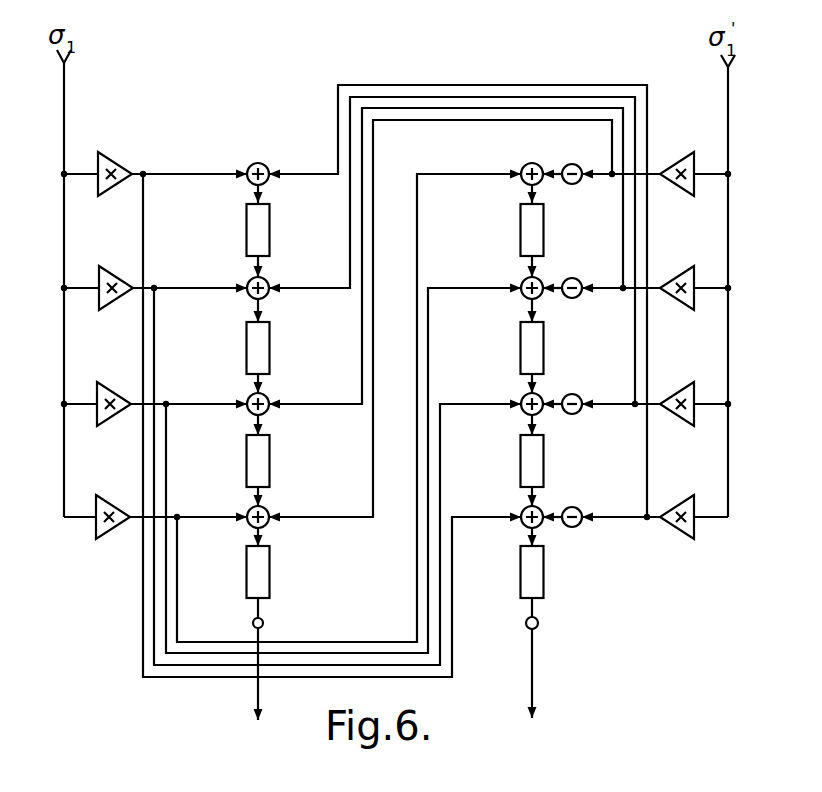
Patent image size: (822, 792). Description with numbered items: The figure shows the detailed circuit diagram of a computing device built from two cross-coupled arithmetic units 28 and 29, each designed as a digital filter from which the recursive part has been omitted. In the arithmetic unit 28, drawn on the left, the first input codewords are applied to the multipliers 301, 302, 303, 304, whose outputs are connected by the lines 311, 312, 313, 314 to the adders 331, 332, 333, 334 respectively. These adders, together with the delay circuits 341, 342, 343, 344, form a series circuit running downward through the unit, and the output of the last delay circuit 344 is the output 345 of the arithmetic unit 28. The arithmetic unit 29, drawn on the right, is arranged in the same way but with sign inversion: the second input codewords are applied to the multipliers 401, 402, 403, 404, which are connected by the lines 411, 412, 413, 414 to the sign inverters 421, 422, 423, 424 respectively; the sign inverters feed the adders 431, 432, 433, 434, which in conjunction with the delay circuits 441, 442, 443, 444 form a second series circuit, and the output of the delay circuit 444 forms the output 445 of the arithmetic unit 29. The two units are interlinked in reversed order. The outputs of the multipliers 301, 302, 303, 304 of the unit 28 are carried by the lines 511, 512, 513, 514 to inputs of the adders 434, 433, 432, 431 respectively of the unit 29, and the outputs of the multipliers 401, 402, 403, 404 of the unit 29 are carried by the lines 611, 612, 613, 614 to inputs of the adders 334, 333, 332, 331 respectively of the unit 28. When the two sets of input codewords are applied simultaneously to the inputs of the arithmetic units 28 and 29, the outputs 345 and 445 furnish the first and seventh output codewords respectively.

The arithmetic unit 28 is at (205, 74).
The arithmetic unit 29 is at (612, 44).
The multiplier 301 is at (109, 153).
The multiplier 302 is at (112, 267).
The multiplier 303 is at (110, 382).
The multiplier 304 is at (108, 495).
The line 311 is at (174, 172).
The line 312 is at (180, 286).
The line 313 is at (192, 402).
The line 314 is at (200, 514).
The adder 331 is at (270, 162).
The adder 332 is at (270, 281).
The adder 333 is at (271, 397).
The adder 334 is at (271, 510).
The delay circuit 341 is at (266, 236).
The delay circuit 342 is at (266, 352).
The delay circuit 343 is at (267, 467).
The delay circuit 344 is at (266, 590).
The output 345 is at (263, 623).
The multiplier 401 is at (676, 162).
The multiplier 402 is at (680, 274).
The multiplier 403 is at (678, 390).
The multiplier 404 is at (678, 504).
The line 411 is at (590, 170).
The line 412 is at (588, 284).
The line 413 is at (600, 398).
The line 414 is at (618, 512).
The sign inverter 421 is at (572, 185).
The sign inverter 422 is at (573, 299).
The sign inverter 423 is at (573, 415).
The sign inverter 424 is at (573, 528).
The adder 431 is at (526, 163).
The adder 432 is at (522, 282).
The adder 433 is at (522, 396).
The adder 434 is at (522, 511).
The delay circuit 441 is at (521, 230).
The delay circuit 442 is at (521, 348).
The delay circuit 443 is at (521, 458).
The delay circuit 444 is at (521, 586).
The output 445 is at (526, 626).
The line 511 is at (143, 207).
The line 512 is at (154, 346).
The line 513 is at (166, 466).
The line 514 is at (177, 590).
The line 611 is at (398, 120).
The line 612 is at (466, 108).
The line 613 is at (493, 97).
The line 614 is at (571, 85).